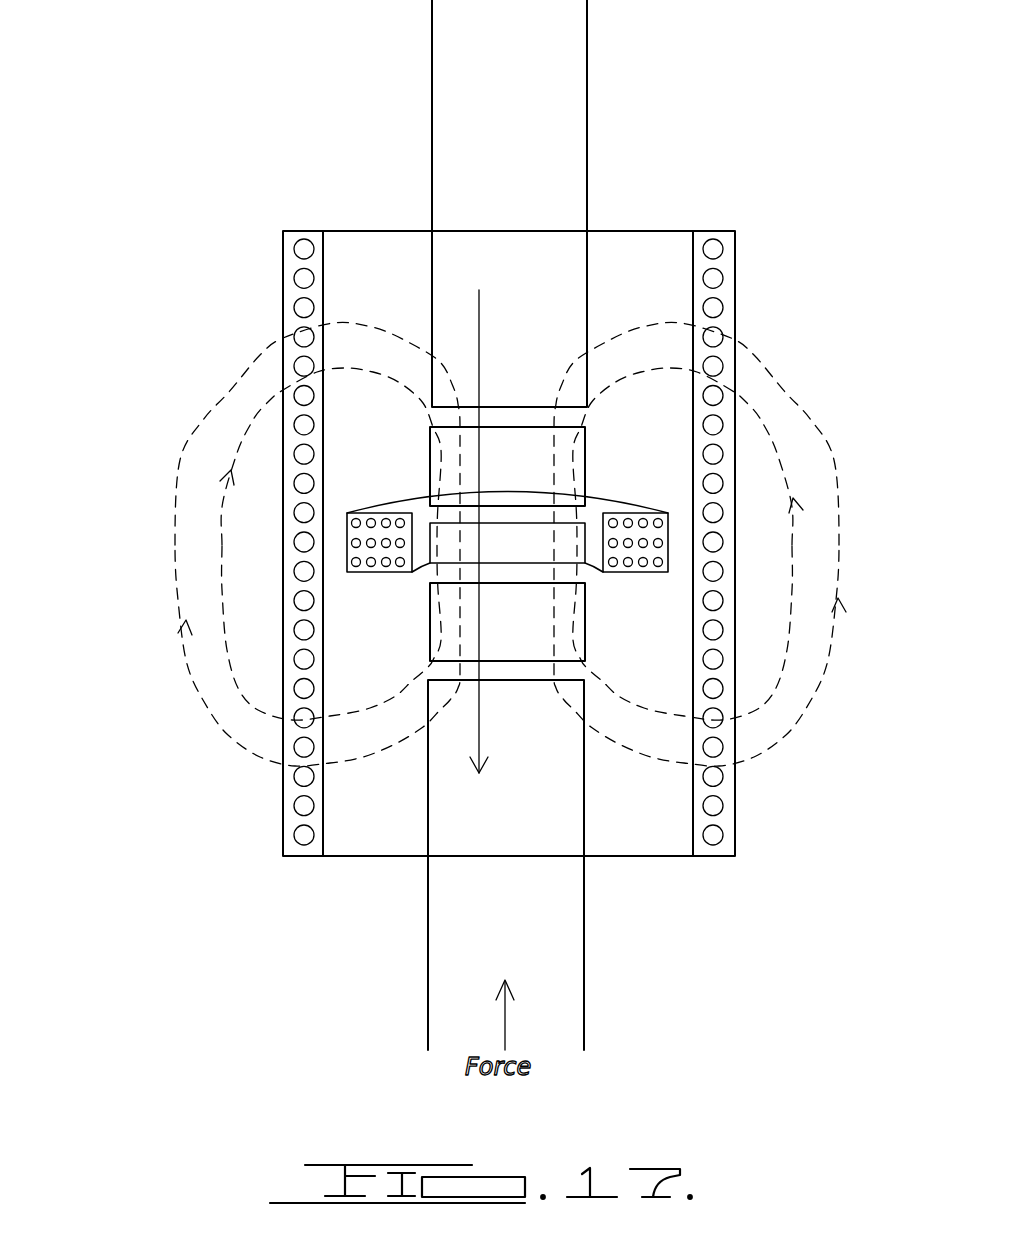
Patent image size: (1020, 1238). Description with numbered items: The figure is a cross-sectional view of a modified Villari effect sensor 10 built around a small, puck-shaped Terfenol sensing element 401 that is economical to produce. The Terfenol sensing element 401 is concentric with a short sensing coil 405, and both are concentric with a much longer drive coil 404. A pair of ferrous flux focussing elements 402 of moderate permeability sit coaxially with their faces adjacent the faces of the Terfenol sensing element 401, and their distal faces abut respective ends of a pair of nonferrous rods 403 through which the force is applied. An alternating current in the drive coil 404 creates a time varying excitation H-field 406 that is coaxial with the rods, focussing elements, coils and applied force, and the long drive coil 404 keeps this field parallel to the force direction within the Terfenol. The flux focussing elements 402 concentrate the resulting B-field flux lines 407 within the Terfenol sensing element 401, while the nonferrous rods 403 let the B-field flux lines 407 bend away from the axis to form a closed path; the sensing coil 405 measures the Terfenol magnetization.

The modified Villari effect sensor 10 is at (135, 255).
The Terfenol sensing element 401 is at (594, 577).
The flux focussing elements 402 is at (592, 468).
The nonferrous rods 403 is at (583, 180).
The drive coil 404 is at (270, 238).
The sensing coil 405 is at (377, 503).
The excitation H-field 406 is at (512, 346).
The B-field flux lines 407 is at (820, 418).